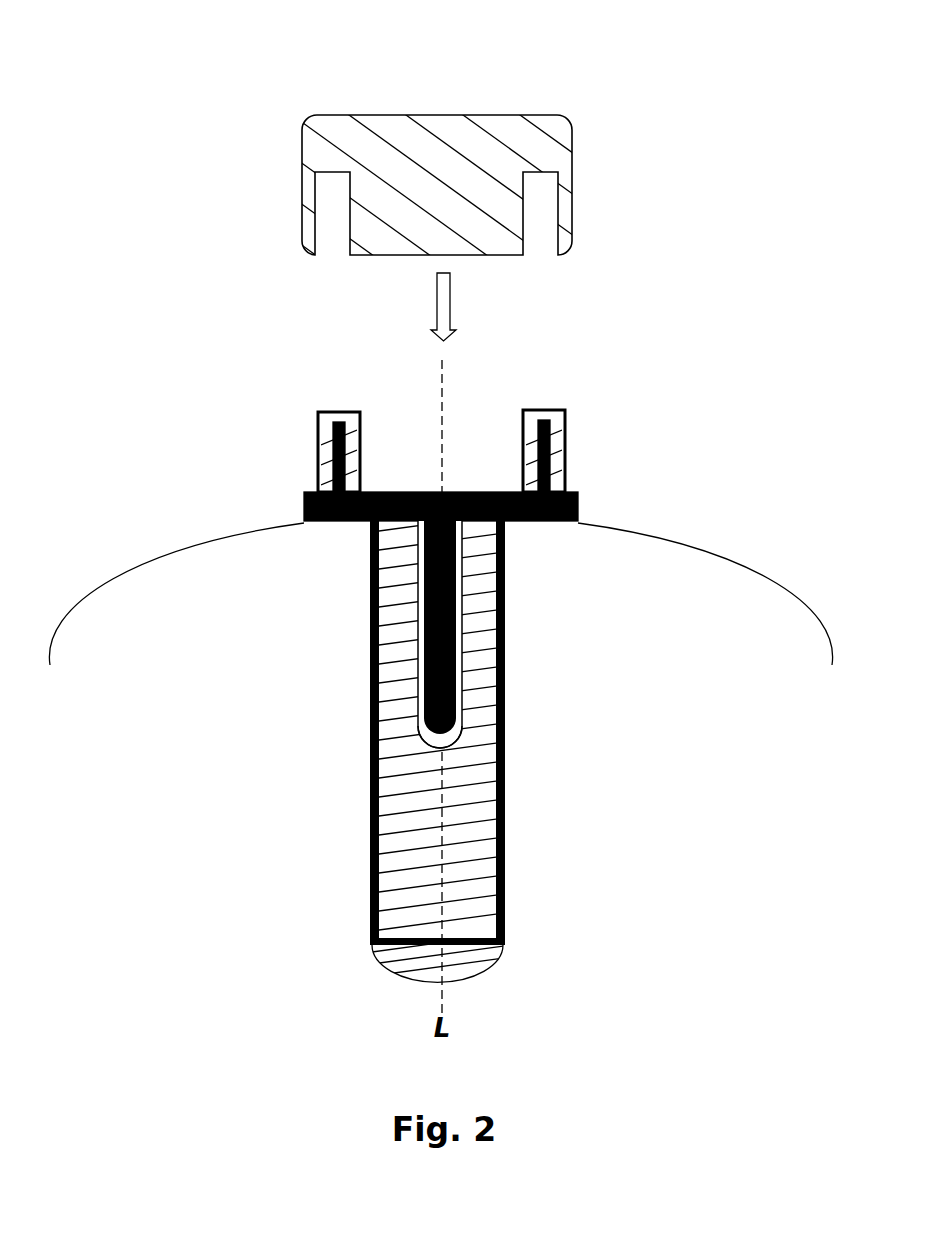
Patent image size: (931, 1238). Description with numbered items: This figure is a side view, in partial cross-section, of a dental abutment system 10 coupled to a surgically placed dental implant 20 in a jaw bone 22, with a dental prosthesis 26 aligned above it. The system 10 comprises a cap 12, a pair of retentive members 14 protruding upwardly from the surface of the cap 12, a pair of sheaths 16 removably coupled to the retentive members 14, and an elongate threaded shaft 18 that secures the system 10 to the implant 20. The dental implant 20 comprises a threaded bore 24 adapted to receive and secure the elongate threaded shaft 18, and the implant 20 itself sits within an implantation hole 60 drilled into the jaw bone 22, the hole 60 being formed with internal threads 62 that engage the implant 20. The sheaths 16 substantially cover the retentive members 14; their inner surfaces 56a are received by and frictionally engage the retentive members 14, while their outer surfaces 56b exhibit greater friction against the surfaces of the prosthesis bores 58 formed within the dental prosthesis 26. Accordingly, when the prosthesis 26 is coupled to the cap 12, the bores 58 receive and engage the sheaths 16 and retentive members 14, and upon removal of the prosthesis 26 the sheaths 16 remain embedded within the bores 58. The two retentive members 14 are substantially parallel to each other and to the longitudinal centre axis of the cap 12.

The dental abutment system 10 is at (630, 370).
The cap 12 is at (307, 492).
The retentive members 14 is at (322, 442).
The sheaths 16 is at (323, 412).
The elongate threaded shaft 18 is at (463, 593).
The dental implant 20 is at (510, 670).
The jaw bone 22 is at (440, 594).
The threaded bore 24 is at (437, 742).
The dental prosthesis 26 is at (427, 113).
The inner surfaces 56a is at (349, 447).
The outer surfaces 56b is at (364, 431).
The prosthesis bores 58 is at (330, 245).
The implantation hole 60 is at (382, 957).
The internal threads 62 is at (415, 968).